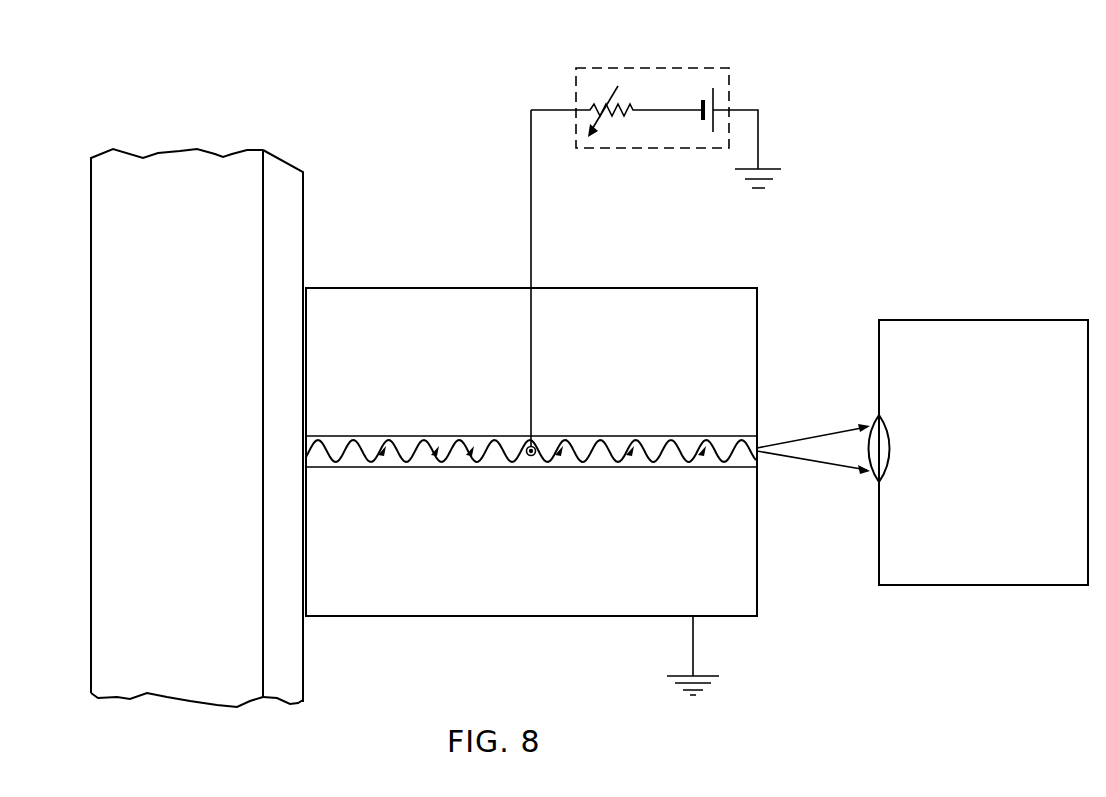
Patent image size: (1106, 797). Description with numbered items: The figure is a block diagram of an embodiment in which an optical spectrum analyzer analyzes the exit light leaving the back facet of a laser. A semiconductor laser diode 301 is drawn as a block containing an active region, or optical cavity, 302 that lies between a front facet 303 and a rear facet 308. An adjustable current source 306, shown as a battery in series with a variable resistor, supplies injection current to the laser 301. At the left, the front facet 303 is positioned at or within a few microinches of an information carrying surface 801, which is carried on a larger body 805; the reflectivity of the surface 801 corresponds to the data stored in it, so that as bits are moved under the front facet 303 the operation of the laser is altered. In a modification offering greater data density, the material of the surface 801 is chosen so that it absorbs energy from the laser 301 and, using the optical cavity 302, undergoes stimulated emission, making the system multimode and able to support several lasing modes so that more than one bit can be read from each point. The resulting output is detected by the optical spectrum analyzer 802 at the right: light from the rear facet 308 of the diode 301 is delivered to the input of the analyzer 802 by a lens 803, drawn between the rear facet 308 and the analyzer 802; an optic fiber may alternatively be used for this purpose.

The cathode / electron source block 805 is at (213, 168).
The information carrying surface 801 is at (288, 186).
The semiconductor laser diode 301 is at (735, 618).
The active region (optical cavity) 302 is at (710, 456).
The front facet 303 is at (308, 438).
The adjustable current source 306 is at (665, 68).
The rear facet 308 is at (757, 441).
The lens 803 is at (871, 479).
The optical spectrum analyzer 802 is at (992, 585).